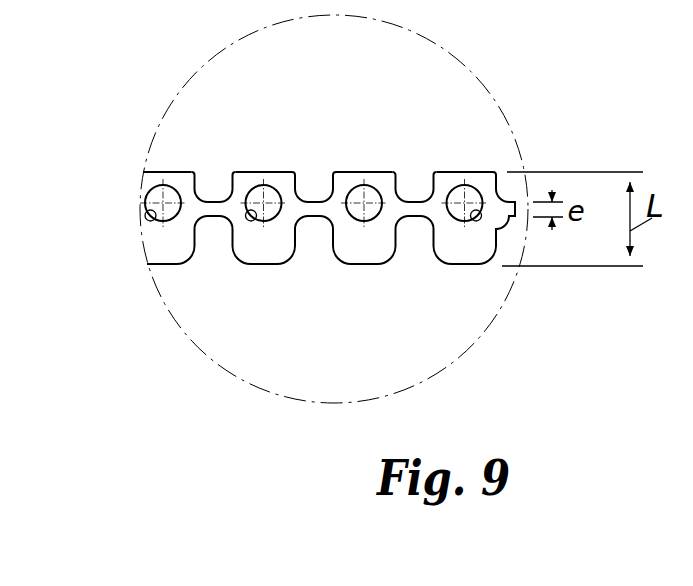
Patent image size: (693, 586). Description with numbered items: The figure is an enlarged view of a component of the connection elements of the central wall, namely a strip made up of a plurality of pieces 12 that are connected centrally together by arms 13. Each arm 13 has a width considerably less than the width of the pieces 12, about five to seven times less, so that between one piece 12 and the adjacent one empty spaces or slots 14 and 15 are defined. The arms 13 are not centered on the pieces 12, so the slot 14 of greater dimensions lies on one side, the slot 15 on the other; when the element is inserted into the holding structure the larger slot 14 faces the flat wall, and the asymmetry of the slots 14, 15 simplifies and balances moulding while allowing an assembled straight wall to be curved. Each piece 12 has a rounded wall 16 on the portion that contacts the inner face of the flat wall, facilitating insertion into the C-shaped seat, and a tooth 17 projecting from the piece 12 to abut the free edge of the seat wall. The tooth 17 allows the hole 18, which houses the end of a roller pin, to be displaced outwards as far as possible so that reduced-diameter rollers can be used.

The piece 12 is at (245, 265).
The arm 13 is at (215, 201).
The slot 14 is at (416, 228).
The slot 15 is at (415, 188).
The rounded wall 16 is at (273, 265).
The tooth 17 is at (156, 178).
The hole 18 is at (146, 220).